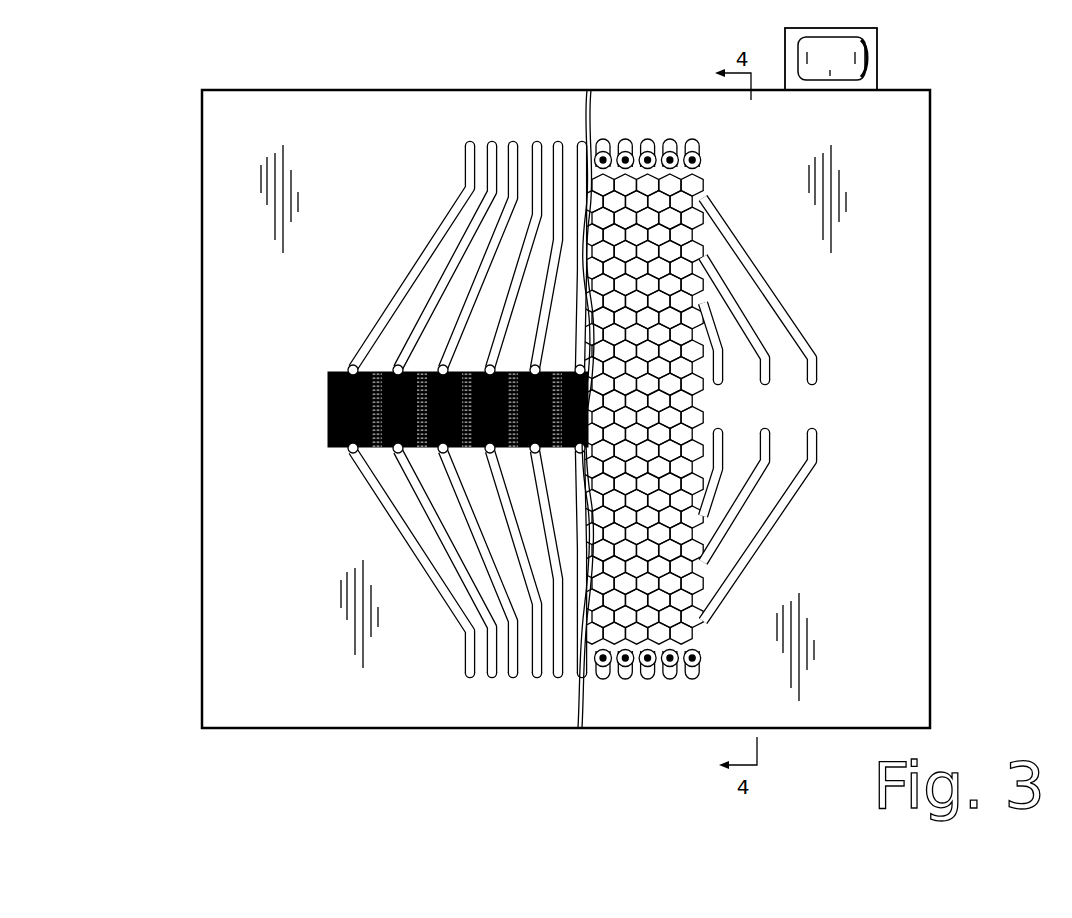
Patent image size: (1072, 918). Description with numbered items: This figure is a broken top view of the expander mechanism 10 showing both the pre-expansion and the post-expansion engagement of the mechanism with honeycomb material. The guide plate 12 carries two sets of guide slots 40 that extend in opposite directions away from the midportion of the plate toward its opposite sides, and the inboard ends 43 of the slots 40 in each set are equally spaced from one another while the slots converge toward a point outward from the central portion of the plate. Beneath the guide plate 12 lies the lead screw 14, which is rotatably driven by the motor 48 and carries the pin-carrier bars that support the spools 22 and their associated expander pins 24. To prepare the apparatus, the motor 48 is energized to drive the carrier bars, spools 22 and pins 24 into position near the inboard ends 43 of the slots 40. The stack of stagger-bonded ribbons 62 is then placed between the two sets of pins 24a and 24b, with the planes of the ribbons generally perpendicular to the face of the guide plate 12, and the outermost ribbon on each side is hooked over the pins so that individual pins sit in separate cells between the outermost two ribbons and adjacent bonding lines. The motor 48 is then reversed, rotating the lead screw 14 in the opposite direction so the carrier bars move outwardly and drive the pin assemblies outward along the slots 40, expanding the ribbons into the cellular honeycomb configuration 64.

The expander mechanism 10 is at (194, 126).
The guide plate 12 is at (905, 618).
The lead screw 14 is at (876, 80).
The spools 22 is at (712, 151).
The expander pins 24 is at (630, 150).
The first set of pins 24a is at (396, 368).
The second set of pins 24b is at (396, 450).
The guide slots 40 is at (511, 146).
The inboard ends 43 is at (818, 431).
The motor 48 is at (816, 63).
The stack of stagger-bonded ribbons 62 is at (327, 411).
The cellular honeycomb configuration 64 is at (672, 397).